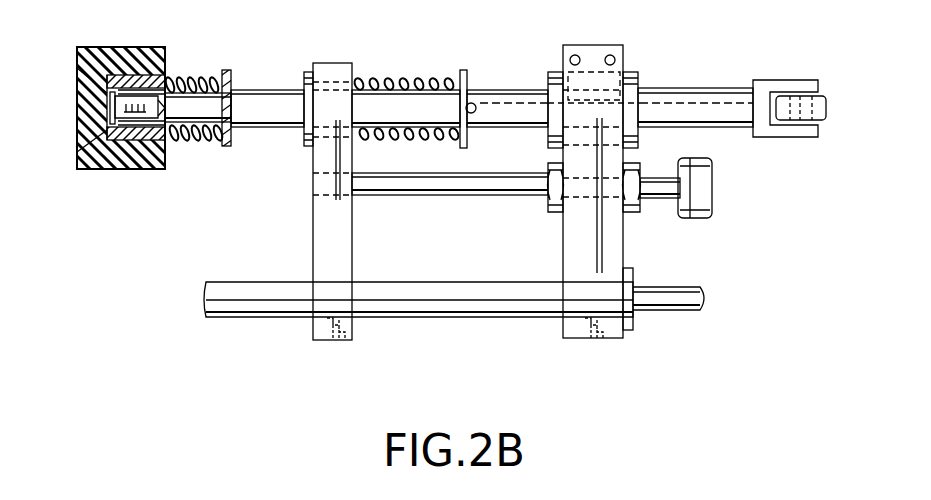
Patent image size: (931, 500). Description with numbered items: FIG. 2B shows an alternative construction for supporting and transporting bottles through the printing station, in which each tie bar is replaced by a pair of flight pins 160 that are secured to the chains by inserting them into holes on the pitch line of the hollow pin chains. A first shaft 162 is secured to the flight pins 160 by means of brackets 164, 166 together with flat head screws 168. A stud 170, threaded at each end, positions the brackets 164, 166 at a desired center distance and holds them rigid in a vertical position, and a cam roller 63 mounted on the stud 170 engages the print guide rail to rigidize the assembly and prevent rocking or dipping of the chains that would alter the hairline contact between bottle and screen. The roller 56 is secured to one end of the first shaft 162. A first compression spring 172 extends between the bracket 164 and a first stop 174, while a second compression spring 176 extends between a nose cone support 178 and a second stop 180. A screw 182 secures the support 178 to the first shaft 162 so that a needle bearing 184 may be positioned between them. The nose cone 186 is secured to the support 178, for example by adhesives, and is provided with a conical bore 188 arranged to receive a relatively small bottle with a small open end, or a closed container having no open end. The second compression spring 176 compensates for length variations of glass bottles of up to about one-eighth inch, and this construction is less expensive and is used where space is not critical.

The roller 56 is at (842, 94).
The cam roller 63 is at (703, 198).
The flight pin 160 is at (413, 287).
The first shaft 162 is at (273, 88).
The bracket 164 is at (318, 227).
The bracket 166 is at (615, 250).
The flat head screw 168 is at (330, 344).
The stud 170 is at (487, 205).
The first compression spring 172 is at (426, 60).
The first stop 174 is at (465, 68).
The second compression spring 176 is at (190, 80).
The nose cone support 178 is at (163, 60).
The second stop 180 is at (233, 72).
The screw 182 is at (113, 108).
The needle bearing 184 is at (133, 58).
The nose cone 186 is at (97, 166).
The conical bore 188 is at (77, 88).